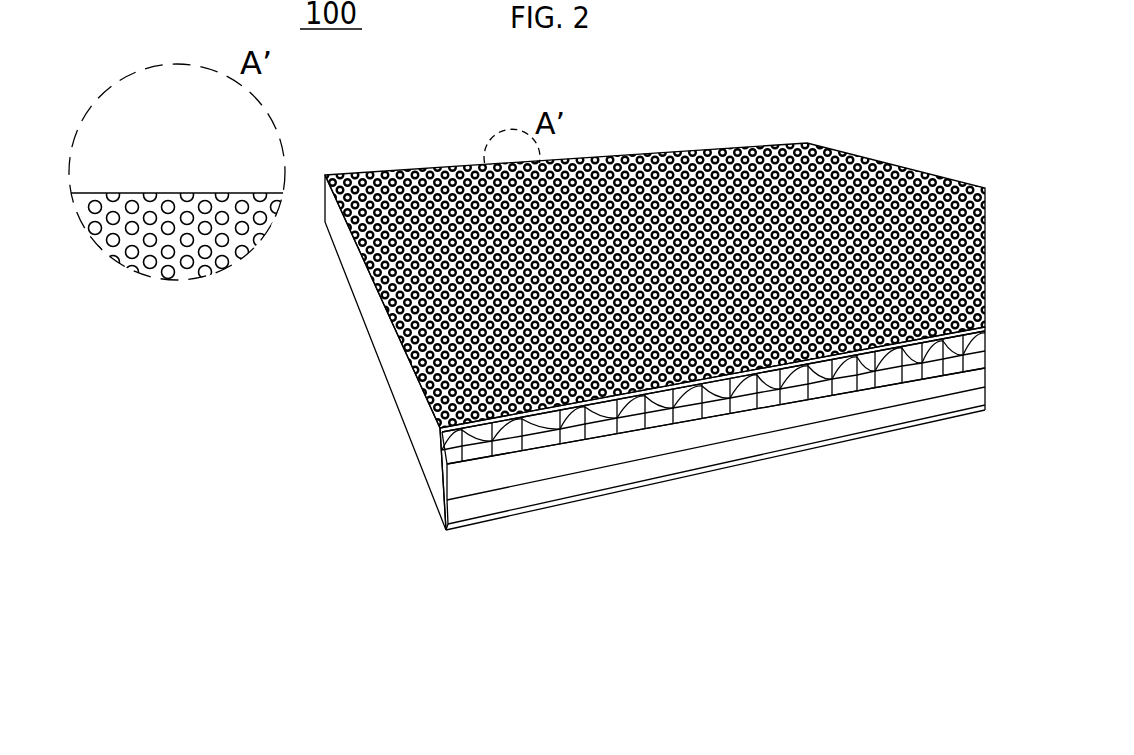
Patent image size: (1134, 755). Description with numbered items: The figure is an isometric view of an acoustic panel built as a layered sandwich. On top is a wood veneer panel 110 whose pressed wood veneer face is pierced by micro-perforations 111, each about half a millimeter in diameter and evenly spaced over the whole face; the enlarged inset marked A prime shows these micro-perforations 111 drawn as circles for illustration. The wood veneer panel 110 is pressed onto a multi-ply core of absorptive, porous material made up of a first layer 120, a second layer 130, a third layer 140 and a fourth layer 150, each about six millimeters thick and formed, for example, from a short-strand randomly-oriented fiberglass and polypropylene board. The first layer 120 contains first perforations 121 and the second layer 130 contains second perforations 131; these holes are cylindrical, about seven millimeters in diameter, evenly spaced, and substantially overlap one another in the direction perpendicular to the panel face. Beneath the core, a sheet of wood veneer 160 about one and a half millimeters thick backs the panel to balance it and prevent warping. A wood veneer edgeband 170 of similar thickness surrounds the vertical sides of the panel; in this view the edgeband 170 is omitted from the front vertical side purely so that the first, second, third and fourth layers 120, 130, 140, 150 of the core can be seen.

The wood veneer panel 110 is at (403, 176).
The micro-perforations 111 is at (367, 196).
The first layer 120 is at (471, 437).
The first perforations 121 is at (751, 381).
The second layer 130 is at (659, 427).
The second perforations 131 is at (500, 454).
The third layer 140 is at (470, 484).
The fourth layer 150 is at (527, 497).
The wood veneer backing sheet 160 is at (592, 504).
The wood veneer edgeband 170 is at (386, 341).